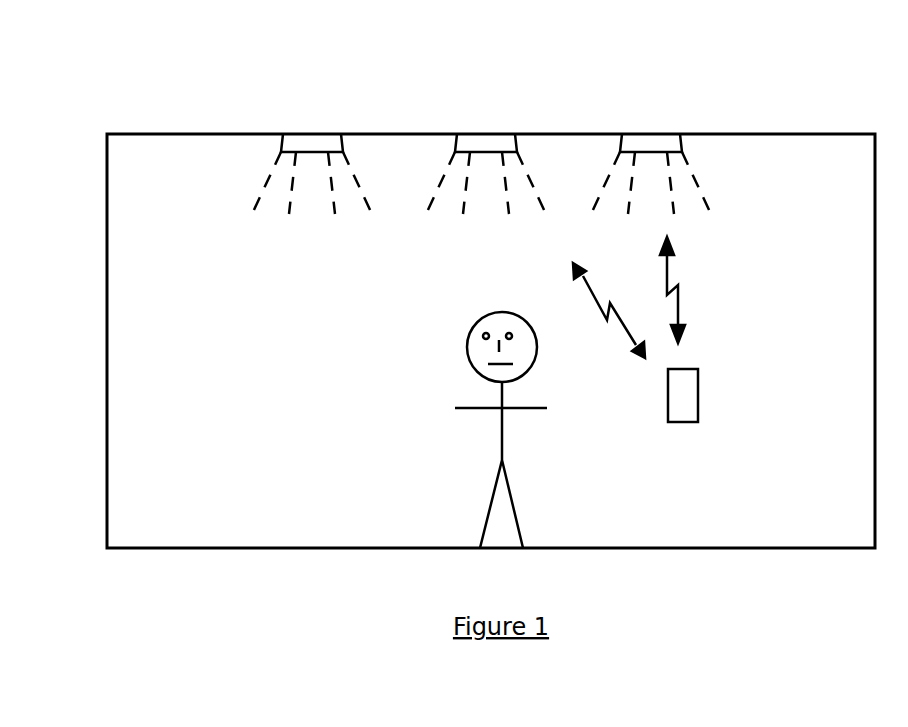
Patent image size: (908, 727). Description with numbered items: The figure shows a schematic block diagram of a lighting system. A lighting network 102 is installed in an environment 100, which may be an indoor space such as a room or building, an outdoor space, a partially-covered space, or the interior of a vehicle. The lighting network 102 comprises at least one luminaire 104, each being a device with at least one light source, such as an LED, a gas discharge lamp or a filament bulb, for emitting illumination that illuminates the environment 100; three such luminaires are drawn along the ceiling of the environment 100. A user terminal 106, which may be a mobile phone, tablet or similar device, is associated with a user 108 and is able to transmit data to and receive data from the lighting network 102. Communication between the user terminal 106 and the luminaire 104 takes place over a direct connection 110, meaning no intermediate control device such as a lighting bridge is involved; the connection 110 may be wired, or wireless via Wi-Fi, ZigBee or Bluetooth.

The environment 100 is at (748, 134).
The lighting network 102 is at (698, 117).
The luminaire 104 is at (283, 134).
The user terminal 106 is at (698, 380).
The user 108 is at (480, 320).
The direct connection 110 is at (680, 310).